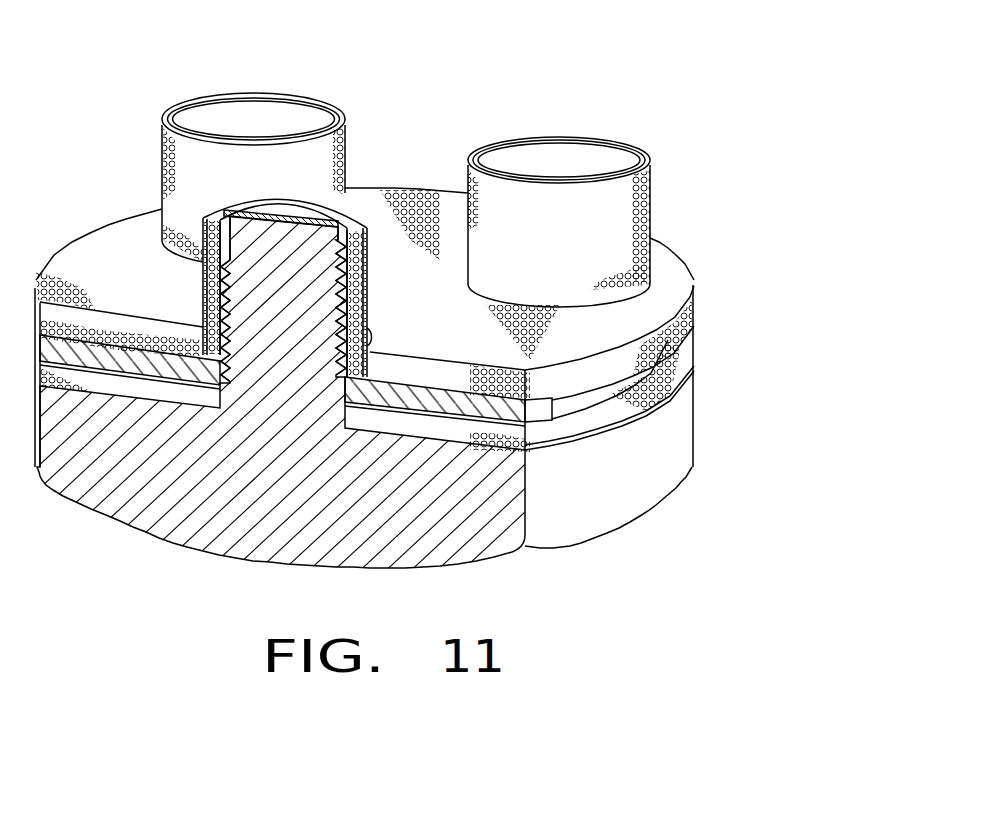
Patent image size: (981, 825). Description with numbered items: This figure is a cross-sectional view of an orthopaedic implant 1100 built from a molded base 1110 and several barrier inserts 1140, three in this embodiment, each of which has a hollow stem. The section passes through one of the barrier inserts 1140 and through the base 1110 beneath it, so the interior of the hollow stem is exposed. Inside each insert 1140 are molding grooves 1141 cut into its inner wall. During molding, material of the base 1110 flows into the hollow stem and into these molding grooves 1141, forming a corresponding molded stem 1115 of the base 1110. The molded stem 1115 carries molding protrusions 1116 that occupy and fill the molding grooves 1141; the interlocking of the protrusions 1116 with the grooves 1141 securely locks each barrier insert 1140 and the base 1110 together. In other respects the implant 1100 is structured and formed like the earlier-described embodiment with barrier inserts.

The implant 1100 is at (574, 80).
The base 1110 is at (712, 421).
The molded stems 1115 is at (303, 240).
The molding protrusions 1116 is at (335, 368).
The barrier inserts 1140 is at (290, 218).
The molding grooves 1141 is at (336, 290).